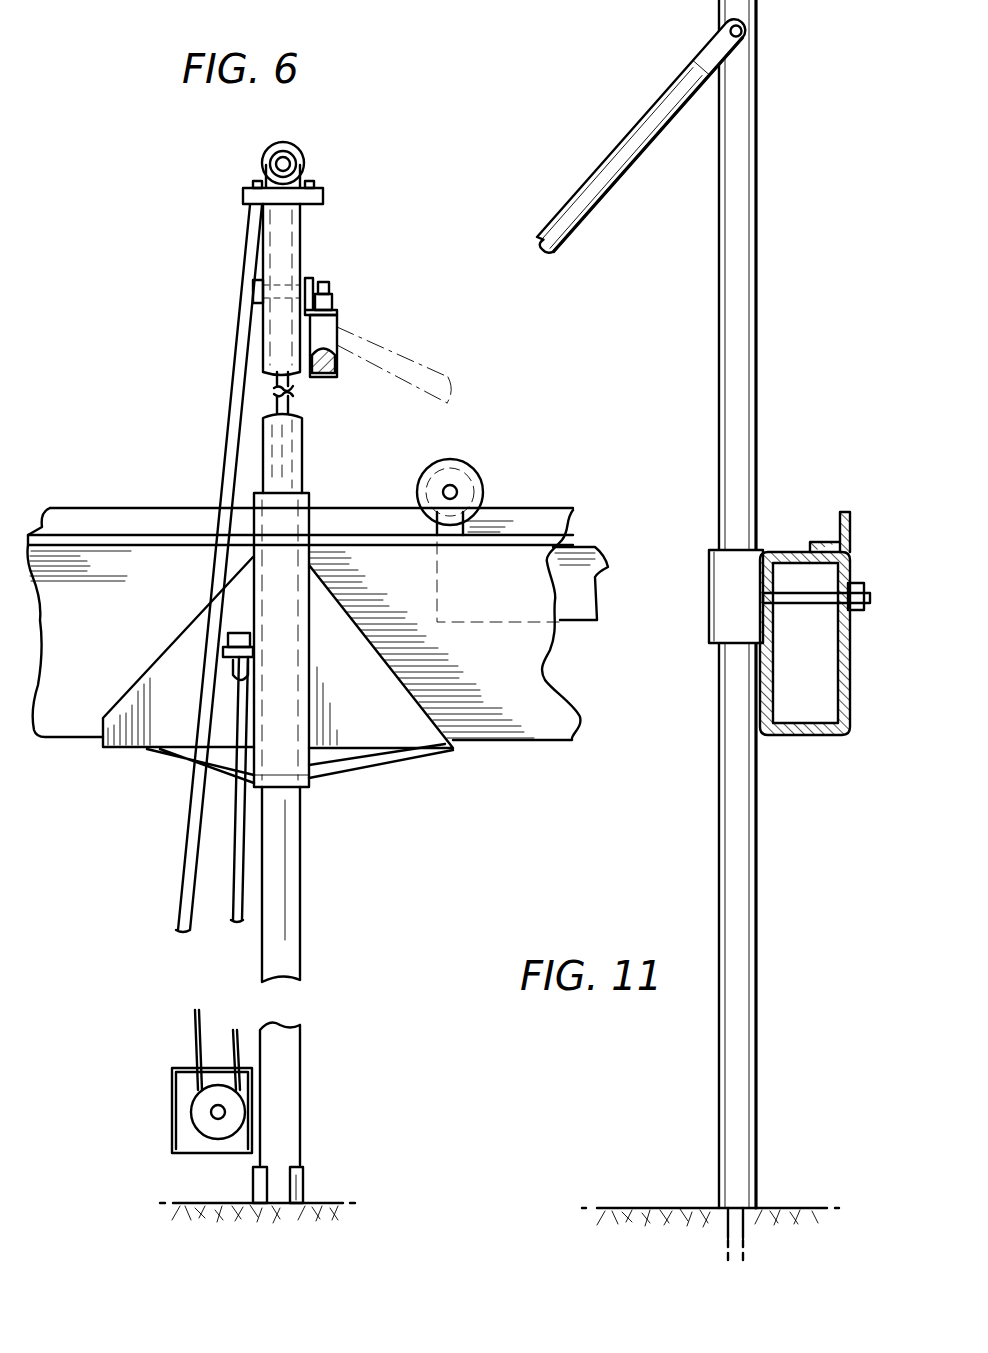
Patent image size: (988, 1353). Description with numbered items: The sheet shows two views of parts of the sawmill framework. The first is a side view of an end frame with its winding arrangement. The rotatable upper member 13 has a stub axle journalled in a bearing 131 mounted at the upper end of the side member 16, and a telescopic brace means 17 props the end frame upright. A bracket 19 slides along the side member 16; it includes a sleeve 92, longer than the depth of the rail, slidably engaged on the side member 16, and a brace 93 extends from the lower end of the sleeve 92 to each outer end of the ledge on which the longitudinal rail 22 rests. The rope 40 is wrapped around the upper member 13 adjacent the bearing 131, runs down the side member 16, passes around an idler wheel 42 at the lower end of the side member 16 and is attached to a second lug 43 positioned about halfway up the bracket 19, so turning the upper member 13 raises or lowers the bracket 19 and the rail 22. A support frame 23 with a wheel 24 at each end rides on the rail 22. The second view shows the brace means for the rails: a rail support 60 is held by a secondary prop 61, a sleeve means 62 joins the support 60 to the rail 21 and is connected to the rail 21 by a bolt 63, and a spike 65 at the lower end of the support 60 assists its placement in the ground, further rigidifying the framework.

In FIG. 6, the upper member 13 is at (310, 157).
In FIG. 6, the bearing 131 is at (270, 177).
In FIG. 6, the telescopic brace means 17 is at (322, 333).
In FIG. 6, the side member 16 is at (302, 440).
In FIG. 6, the bracket 19 is at (373, 727).
In FIG. 6, the longitudinal rail 22 is at (508, 675).
In FIG. 6, the support frame 23 is at (593, 545).
In FIG. 6, the wheel 24 is at (482, 482).
In FIG. 6, the rope 40 is at (238, 310).
In FIG. 6, the second lug 43 is at (228, 656).
In FIG. 6, the idler wheel 42 is at (190, 1113).
In FIG. 6, the sleeve 92 is at (293, 773).
In FIG. 6, the brace 93 is at (180, 763).
In FIG. 11, the rail support 60 is at (740, 270).
In FIG. 11, the secondary prop 61 is at (613, 163).
In FIG. 11, the sleeve means 62 is at (722, 602).
In FIG. 11, the bolt 63 is at (810, 598).
In FIG. 11, the longitudinal rail 21 is at (807, 737).
In FIG. 11, the spike 65 is at (745, 1235).